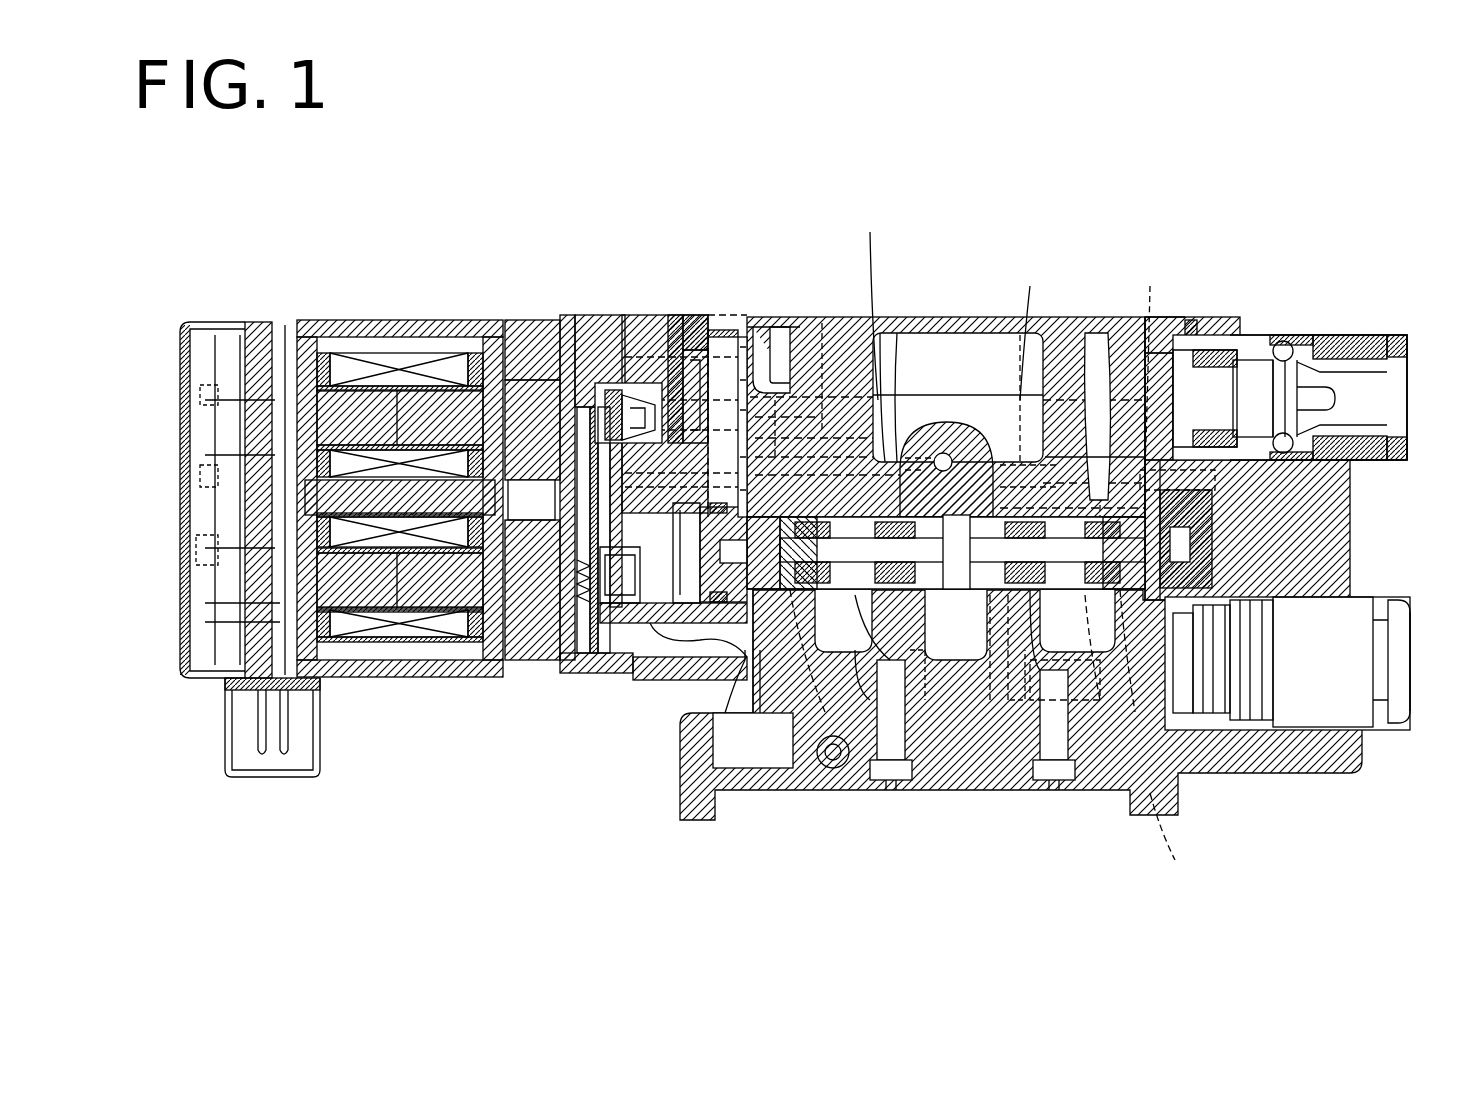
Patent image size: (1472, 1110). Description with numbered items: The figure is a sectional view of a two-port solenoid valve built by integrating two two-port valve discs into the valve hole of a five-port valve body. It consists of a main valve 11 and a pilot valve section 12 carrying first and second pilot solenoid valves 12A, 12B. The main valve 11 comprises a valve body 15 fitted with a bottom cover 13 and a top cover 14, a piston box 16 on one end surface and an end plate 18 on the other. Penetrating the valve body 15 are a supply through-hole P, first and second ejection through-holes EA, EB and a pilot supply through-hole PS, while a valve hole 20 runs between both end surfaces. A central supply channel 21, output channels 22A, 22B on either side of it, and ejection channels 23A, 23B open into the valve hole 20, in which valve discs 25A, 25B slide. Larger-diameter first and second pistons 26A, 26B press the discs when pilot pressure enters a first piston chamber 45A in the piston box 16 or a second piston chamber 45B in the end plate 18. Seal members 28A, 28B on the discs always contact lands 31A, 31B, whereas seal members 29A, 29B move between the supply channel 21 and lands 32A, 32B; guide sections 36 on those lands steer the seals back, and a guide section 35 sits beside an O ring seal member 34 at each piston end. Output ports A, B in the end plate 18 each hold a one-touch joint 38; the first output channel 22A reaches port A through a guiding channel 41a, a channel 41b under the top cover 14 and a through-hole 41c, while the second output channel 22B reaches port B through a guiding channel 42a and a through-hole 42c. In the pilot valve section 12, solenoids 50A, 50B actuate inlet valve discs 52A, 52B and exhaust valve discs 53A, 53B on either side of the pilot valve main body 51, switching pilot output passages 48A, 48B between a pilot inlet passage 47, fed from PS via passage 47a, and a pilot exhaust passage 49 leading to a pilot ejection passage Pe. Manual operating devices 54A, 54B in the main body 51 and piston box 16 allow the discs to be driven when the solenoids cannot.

The main valve 11 is at (733, 200).
The pilot valve section 12 is at (384, 278).
The first pilot solenoid valve 12A is at (316, 320).
The second pilot solenoid valve 12B is at (345, 680).
The bottom cover 13 is at (1140, 805).
The top cover 14 is at (990, 320).
The valve body 15 is at (1080, 470).
The piston box 16 is at (650, 322).
The end plate 18 is at (1225, 335).
The valve hole 20 is at (1115, 400).
The supply channel 21 is at (960, 590).
The first output channel 22A is at (887, 462).
The second output channel 22B is at (1100, 705).
The first ejection channel 23A is at (820, 712).
The second ejection channel 23B is at (1135, 760).
The first valve disc 25A is at (823, 517).
The second valve disc 25B is at (1085, 340).
The first piston 26A is at (688, 610).
The second piston 26B is at (1225, 500).
The seal member 28A is at (870, 705).
The seal member 28B is at (1040, 675).
The seal member 29A is at (992, 700).
The seal member 29B is at (1010, 700).
The land 31A is at (888, 770).
The land 31B is at (1058, 775).
The land 32A is at (900, 668).
The land 32B is at (966, 410).
The seal member 34 is at (745, 713).
The guide section 35 is at (770, 713).
The guide sections 36 is at (925, 705).
The one-touch joint 38 is at (1395, 332).
The guiding channel 41a is at (875, 302).
The channel 41b is at (1042, 327).
The through-hole 41c is at (1143, 387).
The guiding channel 42a is at (1070, 700).
The through-hole 42c is at (1178, 862).
The first piston chamber 45A is at (705, 600).
The second piston chamber 45B is at (1225, 545).
The pilot inlet passage 47 is at (580, 655).
The passage 47a is at (775, 400).
The first pilot output passage 48A is at (660, 640).
The second pilot output passage 48B is at (805, 400).
The pilot exhaust passage 49 is at (602, 655).
The solenoid 50A is at (435, 322).
The solenoid 50B is at (425, 680).
The pilot valve main body 51 is at (580, 322).
The inlet valve disc 52A is at (497, 322).
The inlet valve disc 52B is at (515, 680).
The exhaust valve disc 53A is at (625, 322).
The exhaust valve disc 53B is at (590, 656).
The first manual operating device 54A is at (612, 390).
The second manual operating device 54B is at (700, 318).
The pilot supply through-hole PS is at (943, 452).
The pilot ejection passage Pe is at (834, 762).
The first ejection through-hole EA is at (860, 632).
The second ejection through-hole EB is at (1082, 632).
The supply through-hole P is at (951, 632).
The first output port A is at (1437, 392).
The second output port B is at (1440, 637).